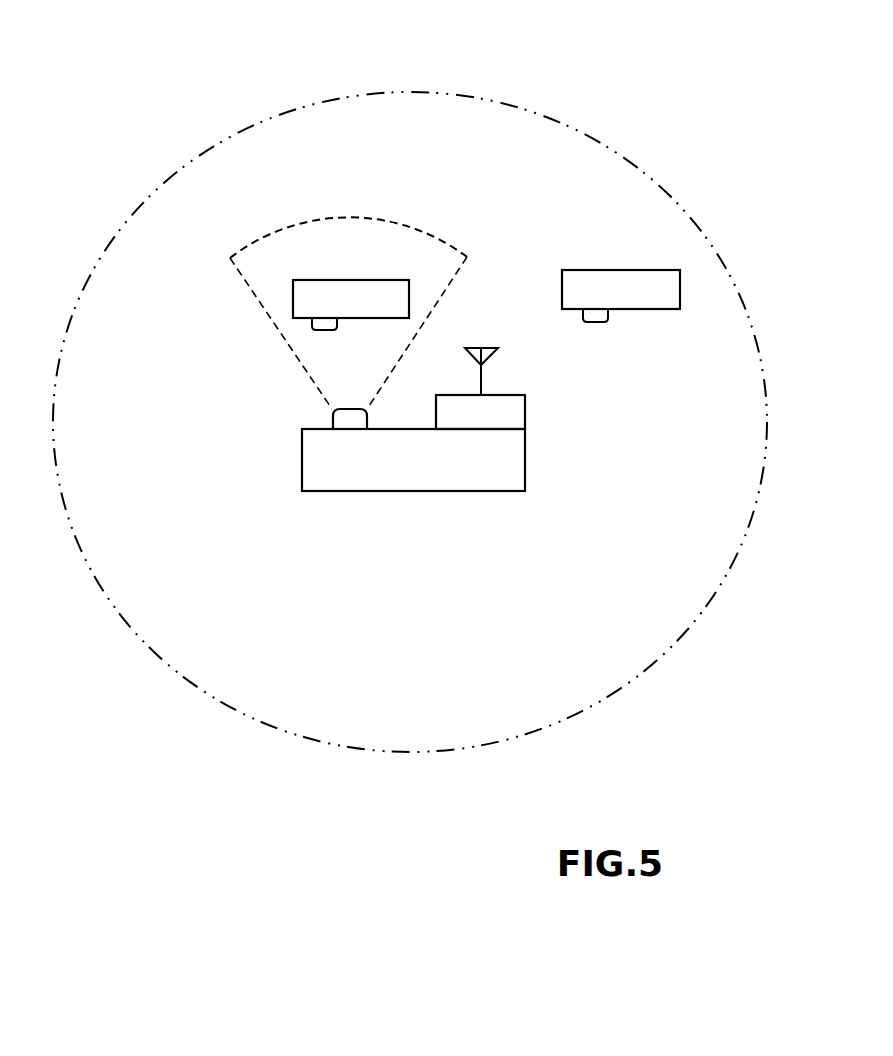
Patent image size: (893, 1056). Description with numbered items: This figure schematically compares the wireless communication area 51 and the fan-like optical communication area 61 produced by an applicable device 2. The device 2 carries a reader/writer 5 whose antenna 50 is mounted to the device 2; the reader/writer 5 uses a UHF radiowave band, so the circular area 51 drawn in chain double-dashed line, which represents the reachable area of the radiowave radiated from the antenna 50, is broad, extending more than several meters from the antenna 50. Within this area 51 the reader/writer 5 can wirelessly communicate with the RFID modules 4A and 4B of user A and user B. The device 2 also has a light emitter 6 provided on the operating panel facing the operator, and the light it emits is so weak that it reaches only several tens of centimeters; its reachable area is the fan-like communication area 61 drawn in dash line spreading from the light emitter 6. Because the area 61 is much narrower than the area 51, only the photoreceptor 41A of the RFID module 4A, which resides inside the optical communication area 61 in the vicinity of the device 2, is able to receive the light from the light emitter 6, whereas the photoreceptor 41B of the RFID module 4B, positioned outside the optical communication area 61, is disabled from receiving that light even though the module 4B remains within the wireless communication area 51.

The wireless communication area 51 is at (477, 97).
The fan-like communication area 61 is at (393, 217).
The RFID module 4A is at (292, 298).
The photoreceptor 41A is at (310, 326).
The RFID module 4B is at (575, 270).
The photoreceptor 41B is at (607, 322).
The antenna 50 is at (488, 347).
The reader/writer 5 is at (510, 402).
The light emitter 6 is at (332, 423).
The device 2 is at (397, 492).